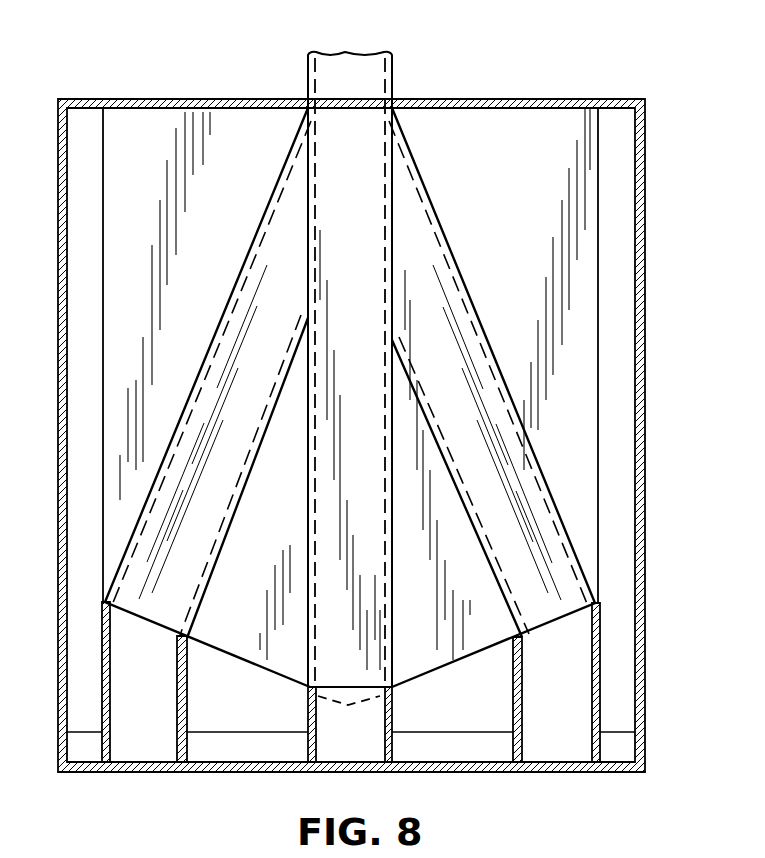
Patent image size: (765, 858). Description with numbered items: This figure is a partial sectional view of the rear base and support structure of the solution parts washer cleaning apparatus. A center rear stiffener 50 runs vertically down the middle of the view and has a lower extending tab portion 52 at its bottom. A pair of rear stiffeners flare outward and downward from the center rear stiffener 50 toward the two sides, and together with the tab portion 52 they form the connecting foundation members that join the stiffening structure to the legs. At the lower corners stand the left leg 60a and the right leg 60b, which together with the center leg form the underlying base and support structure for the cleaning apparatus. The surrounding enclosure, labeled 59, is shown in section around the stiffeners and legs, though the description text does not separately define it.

The center rear stiffener 50 is at (372, 77).
The lower extending tab portion 52 is at (353, 733).
The housing 59 is at (525, 138).
The left leg 60a is at (145, 733).
The right leg 60b is at (558, 728).